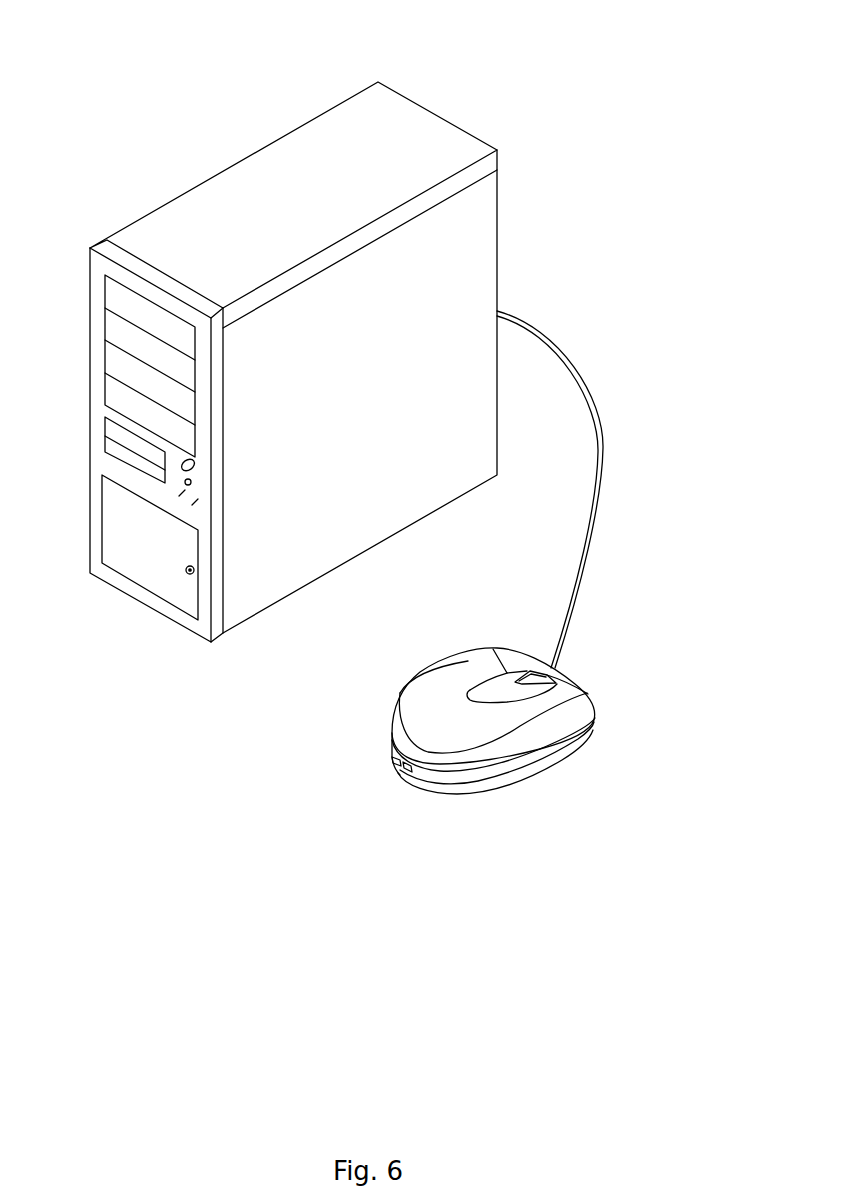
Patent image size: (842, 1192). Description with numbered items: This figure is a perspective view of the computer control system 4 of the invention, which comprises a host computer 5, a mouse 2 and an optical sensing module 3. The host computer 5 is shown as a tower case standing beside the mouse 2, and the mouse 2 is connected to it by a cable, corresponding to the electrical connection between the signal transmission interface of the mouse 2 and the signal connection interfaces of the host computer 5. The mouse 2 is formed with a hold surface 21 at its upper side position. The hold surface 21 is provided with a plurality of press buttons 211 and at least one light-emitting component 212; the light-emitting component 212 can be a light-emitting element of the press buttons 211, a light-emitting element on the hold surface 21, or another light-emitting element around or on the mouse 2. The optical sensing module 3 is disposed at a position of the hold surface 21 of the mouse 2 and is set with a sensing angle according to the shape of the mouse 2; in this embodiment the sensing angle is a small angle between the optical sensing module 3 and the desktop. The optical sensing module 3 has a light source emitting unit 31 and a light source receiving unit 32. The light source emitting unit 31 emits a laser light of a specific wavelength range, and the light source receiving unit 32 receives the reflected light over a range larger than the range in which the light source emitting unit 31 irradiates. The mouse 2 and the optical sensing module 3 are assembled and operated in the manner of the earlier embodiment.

The mouse 2 is at (447, 668).
The hold surface 21 is at (437, 708).
The press buttons 211 is at (568, 692).
The light-emitting component 212 is at (490, 690).
The optical sensing module 3 is at (390, 757).
The light source emitting unit 31 is at (400, 757).
The light source receiving unit 32 is at (415, 777).
The computer control system 4 is at (613, 162).
The host computer 5 is at (245, 207).